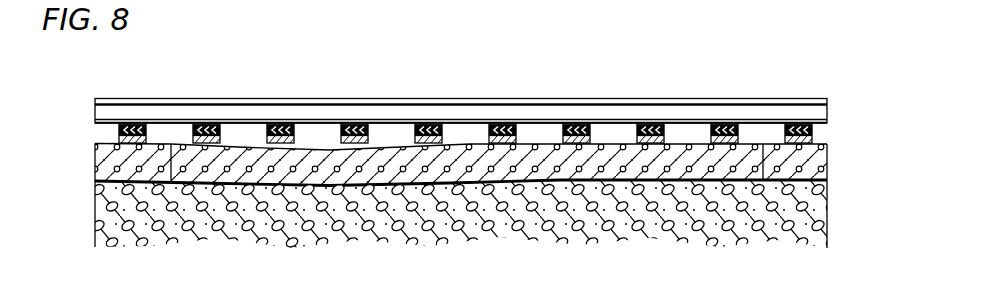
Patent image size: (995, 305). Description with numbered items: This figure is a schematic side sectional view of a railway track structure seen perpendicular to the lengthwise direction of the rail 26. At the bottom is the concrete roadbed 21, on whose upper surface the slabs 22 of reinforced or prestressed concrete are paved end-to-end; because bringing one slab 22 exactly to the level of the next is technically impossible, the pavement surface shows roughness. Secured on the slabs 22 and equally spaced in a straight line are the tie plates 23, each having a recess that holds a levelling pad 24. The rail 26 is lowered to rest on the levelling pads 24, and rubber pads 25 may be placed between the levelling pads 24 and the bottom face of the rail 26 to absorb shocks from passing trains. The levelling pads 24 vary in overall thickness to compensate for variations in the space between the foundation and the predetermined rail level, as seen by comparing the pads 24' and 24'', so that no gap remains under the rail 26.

The concrete roadbed 21 is at (295, 228).
The slab 22 is at (362, 183).
The tie plate 23 is at (712, 139).
The levelling pad 24 is at (645, 99).
The levelling pad 24' is at (150, 99).
The levelling pad 24'' is at (287, 99).
The rubber pad 25 is at (503, 125).
The rail 26 is at (383, 100).